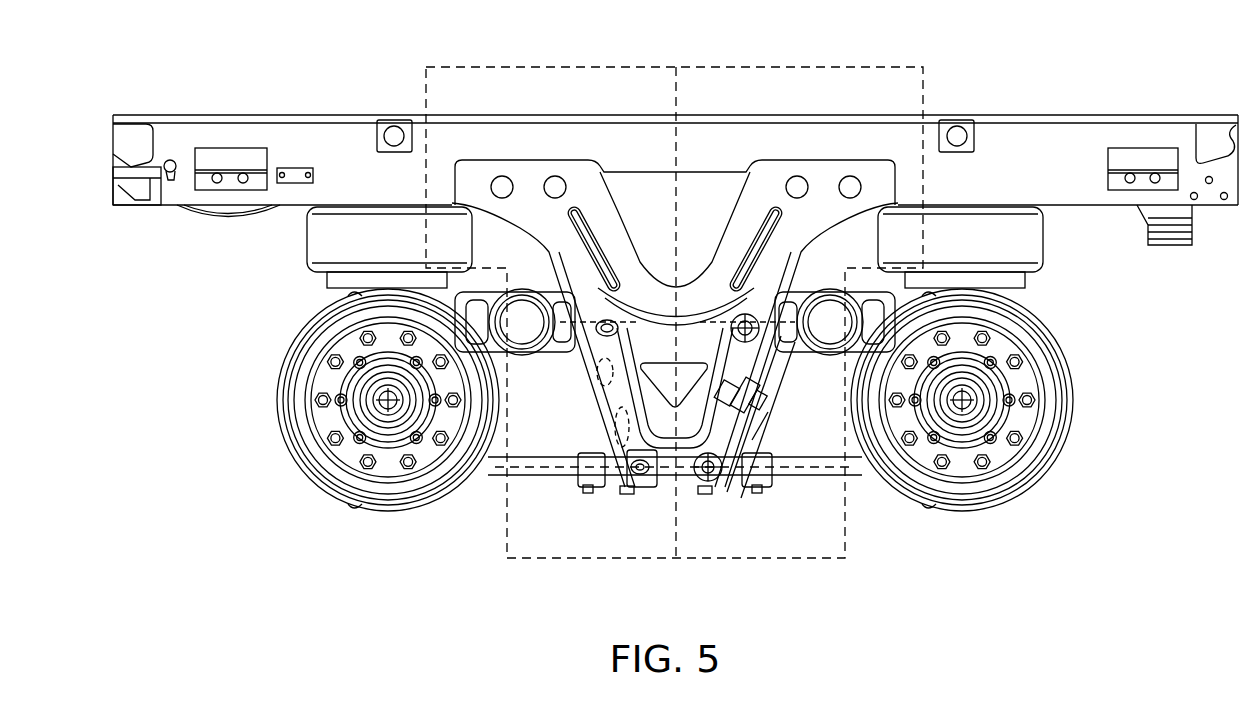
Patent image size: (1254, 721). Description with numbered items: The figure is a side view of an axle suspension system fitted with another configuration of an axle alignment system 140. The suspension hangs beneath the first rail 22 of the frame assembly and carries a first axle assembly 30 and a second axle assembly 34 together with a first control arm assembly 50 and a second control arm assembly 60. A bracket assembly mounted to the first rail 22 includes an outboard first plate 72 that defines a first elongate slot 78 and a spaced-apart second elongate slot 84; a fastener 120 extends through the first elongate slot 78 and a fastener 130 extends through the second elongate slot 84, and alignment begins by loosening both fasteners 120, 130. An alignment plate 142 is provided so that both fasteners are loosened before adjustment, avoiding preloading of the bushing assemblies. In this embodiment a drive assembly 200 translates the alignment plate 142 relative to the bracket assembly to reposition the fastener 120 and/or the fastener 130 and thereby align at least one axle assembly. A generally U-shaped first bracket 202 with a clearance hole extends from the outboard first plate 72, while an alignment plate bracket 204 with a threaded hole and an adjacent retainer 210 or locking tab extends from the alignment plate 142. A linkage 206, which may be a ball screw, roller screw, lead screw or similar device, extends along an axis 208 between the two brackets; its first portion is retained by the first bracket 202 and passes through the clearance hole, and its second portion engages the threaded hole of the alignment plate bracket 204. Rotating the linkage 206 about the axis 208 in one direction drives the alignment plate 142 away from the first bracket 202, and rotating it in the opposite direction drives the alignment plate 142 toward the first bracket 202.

The first rail 22 is at (148, 234).
The first axle assembly 30 is at (975, 537).
The second axle assembly 34 is at (405, 530).
The first control arm assembly 50 is at (563, 489).
The second control arm assembly 60 is at (537, 280).
The first plate 72 is at (662, 316).
The first elongate slot 78 is at (628, 487).
The second elongate slot 84 is at (594, 340).
The fastener 120 is at (650, 480).
The fastener 130 is at (610, 326).
The axle alignment system 140 is at (703, 67).
The alignment plate 142 is at (740, 318).
The drive assembly 200 is at (752, 478).
The first bracket 202 is at (675, 388).
The alignment plate bracket 204 is at (732, 388).
The linkage 206 is at (731, 389).
The axis 208 is at (762, 400).
The retainer 210 is at (760, 428).